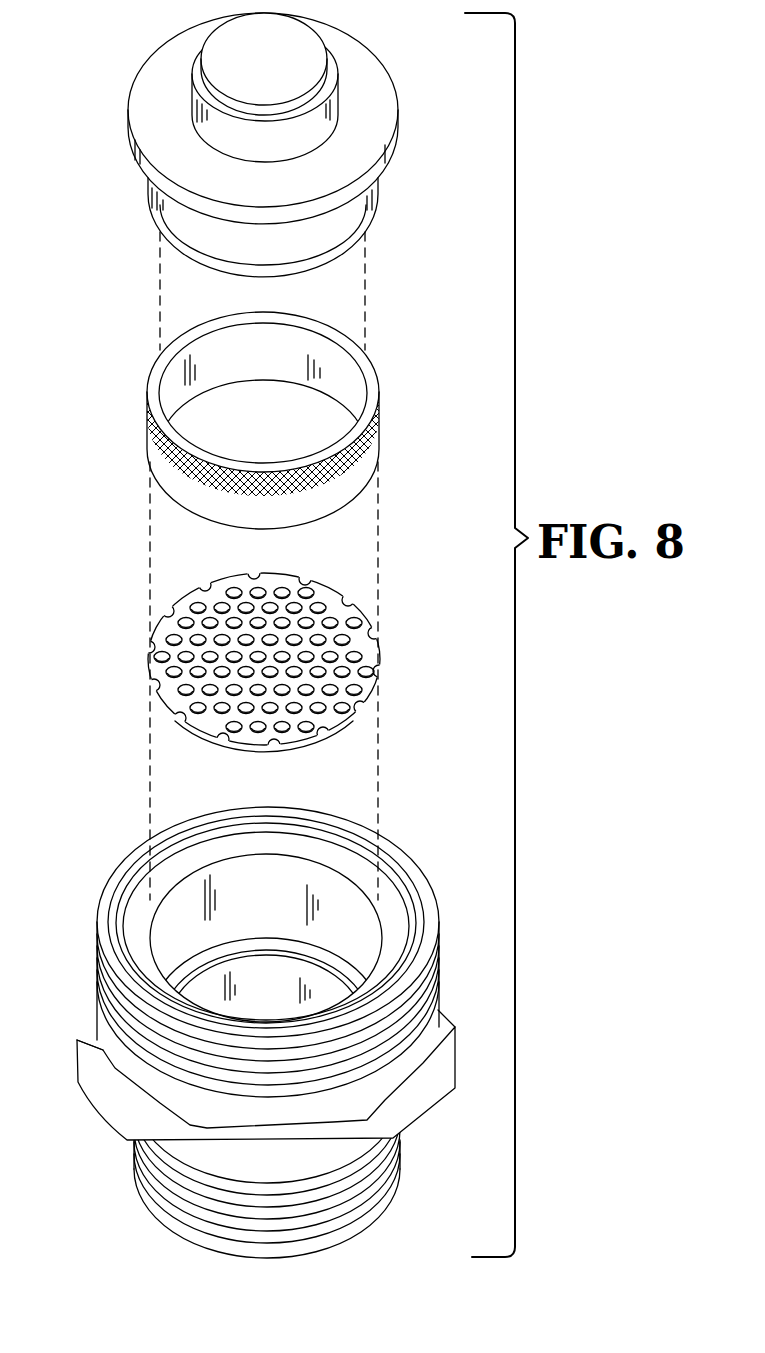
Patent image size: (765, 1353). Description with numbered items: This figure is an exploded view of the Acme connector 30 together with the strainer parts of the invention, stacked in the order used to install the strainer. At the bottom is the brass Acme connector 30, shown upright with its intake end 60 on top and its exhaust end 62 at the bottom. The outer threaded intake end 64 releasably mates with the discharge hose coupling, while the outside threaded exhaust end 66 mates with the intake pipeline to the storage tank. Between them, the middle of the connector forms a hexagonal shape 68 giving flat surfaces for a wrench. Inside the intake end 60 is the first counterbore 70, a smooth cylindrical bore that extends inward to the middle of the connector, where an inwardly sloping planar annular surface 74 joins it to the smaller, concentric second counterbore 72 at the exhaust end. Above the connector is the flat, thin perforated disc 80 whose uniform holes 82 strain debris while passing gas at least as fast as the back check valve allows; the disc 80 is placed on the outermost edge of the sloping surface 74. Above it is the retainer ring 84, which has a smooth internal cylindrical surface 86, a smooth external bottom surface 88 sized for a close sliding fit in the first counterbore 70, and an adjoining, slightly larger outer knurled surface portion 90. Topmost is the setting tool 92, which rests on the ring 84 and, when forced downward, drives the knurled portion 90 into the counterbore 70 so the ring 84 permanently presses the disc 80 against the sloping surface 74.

The setting tool 92 is at (108, 92).
The retainer ring 84 is at (245, 421).
The smooth internal cylindrical surface 86 is at (290, 350).
The smooth surface 88 is at (322, 500).
The outer knurled surface portion 90 is at (378, 423).
The perforated disc 80 is at (216, 673).
The holes 82 is at (202, 710).
The Acme connector 30 is at (257, 1021).
The intake end 60 is at (130, 872).
The first counterbore 70 is at (266, 905).
The second counterbore 72 is at (218, 982).
The inwardly sloping planar annular surface 74 is at (337, 963).
The outer threaded intake end 64 is at (440, 968).
The hexagonal shape 68 is at (77, 1043).
The outside threaded exhaust end 66 is at (133, 1167).
The exhaust end 62 is at (370, 1227).